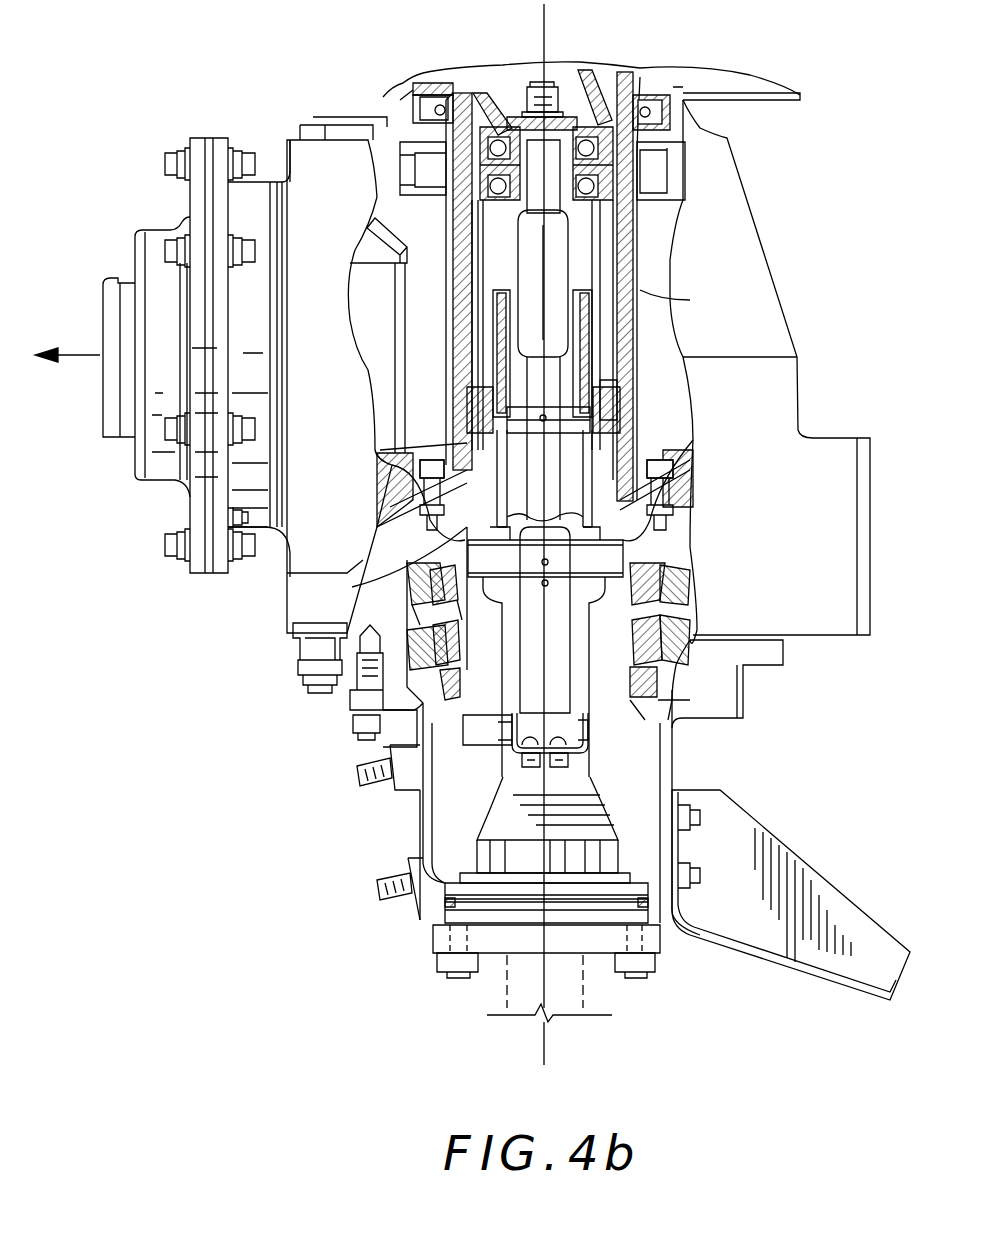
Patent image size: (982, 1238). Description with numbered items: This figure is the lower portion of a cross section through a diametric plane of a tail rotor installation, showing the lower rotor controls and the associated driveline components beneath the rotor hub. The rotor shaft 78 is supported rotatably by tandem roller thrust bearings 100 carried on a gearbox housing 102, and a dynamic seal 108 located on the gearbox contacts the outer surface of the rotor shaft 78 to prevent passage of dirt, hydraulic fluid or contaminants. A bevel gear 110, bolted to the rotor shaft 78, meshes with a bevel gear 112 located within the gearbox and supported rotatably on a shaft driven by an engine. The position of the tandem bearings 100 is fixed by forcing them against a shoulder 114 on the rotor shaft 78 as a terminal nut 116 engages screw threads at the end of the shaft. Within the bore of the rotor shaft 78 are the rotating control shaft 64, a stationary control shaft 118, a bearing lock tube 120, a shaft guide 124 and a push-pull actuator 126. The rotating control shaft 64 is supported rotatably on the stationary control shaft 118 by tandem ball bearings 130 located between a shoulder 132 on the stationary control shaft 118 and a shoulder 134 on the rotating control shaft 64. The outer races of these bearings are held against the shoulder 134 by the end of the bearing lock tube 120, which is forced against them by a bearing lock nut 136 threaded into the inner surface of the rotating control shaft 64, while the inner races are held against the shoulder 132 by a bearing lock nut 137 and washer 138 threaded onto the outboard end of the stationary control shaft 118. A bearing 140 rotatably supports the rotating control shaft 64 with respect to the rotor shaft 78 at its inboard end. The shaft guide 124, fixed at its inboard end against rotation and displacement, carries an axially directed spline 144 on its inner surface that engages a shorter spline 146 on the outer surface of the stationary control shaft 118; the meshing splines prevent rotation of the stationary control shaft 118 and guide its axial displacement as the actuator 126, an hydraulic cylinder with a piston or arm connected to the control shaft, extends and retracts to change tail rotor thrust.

The rotating control shaft 64 is at (450, 208).
The rotor shaft 78 is at (627, 282).
The tandem roller thrust bearings 100 is at (445, 637).
The gearbox housing 102 is at (313, 592).
The dynamic seal 108 is at (655, 108).
The bevel gear 110 is at (420, 488).
The bevel gear 112 is at (402, 455).
The shoulder 114 is at (440, 585).
The terminal nut 116 is at (655, 703).
The stationary control shaft 118 is at (500, 247).
The bearing lock tube 120 is at (490, 305).
The shaft guide 124 is at (640, 495).
The push-pull actuator 126 is at (575, 470).
The tandem ball bearings 130 is at (633, 170).
The shoulder 132 is at (635, 237).
The shoulder 134 is at (420, 103).
The bearing lock nut 136 is at (630, 432).
The bearing lock nut 137 is at (557, 93).
The washer 138 is at (522, 118).
The bearing 140 is at (635, 402).
The axially directed spline 144 is at (600, 312).
The spline 146 is at (583, 377).